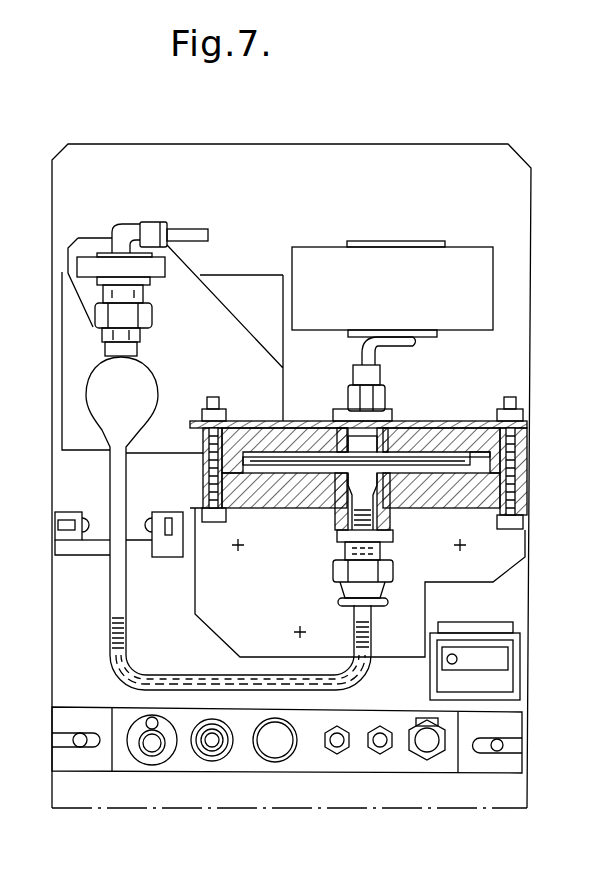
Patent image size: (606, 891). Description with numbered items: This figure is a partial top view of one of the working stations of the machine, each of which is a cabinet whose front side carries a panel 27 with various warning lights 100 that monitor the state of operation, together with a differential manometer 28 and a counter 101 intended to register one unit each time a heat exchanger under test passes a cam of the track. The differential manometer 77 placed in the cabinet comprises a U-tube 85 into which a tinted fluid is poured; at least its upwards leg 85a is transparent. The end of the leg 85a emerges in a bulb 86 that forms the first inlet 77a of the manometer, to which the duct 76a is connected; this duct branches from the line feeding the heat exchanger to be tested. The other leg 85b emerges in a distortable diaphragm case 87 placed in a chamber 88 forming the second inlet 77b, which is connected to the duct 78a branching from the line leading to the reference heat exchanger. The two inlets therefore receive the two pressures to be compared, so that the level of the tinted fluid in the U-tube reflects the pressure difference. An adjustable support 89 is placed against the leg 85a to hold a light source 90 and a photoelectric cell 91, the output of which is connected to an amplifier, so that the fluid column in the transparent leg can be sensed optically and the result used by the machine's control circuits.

The differential manometer 28 is at (97, 463).
The duct 76a is at (125, 233).
The inlet 77a is at (108, 335).
The bulb 86 is at (95, 397).
The differential manometer 77 is at (134, 649).
The U-tube 85 is at (192, 660).
The upwards leg 85a is at (110, 626).
The leg 85b is at (354, 612).
The photoelectric cell 91 is at (90, 520).
The light source 90 is at (152, 520).
The adjustable support 89 is at (156, 548).
The chamber 88 is at (505, 470).
The distortable diaphragm case 87 is at (432, 458).
The duct 78a is at (384, 386).
The second inlet 77b is at (352, 399).
The counter 101 is at (482, 648).
The panel 27 is at (453, 738).
The warning lights 100 is at (380, 757).